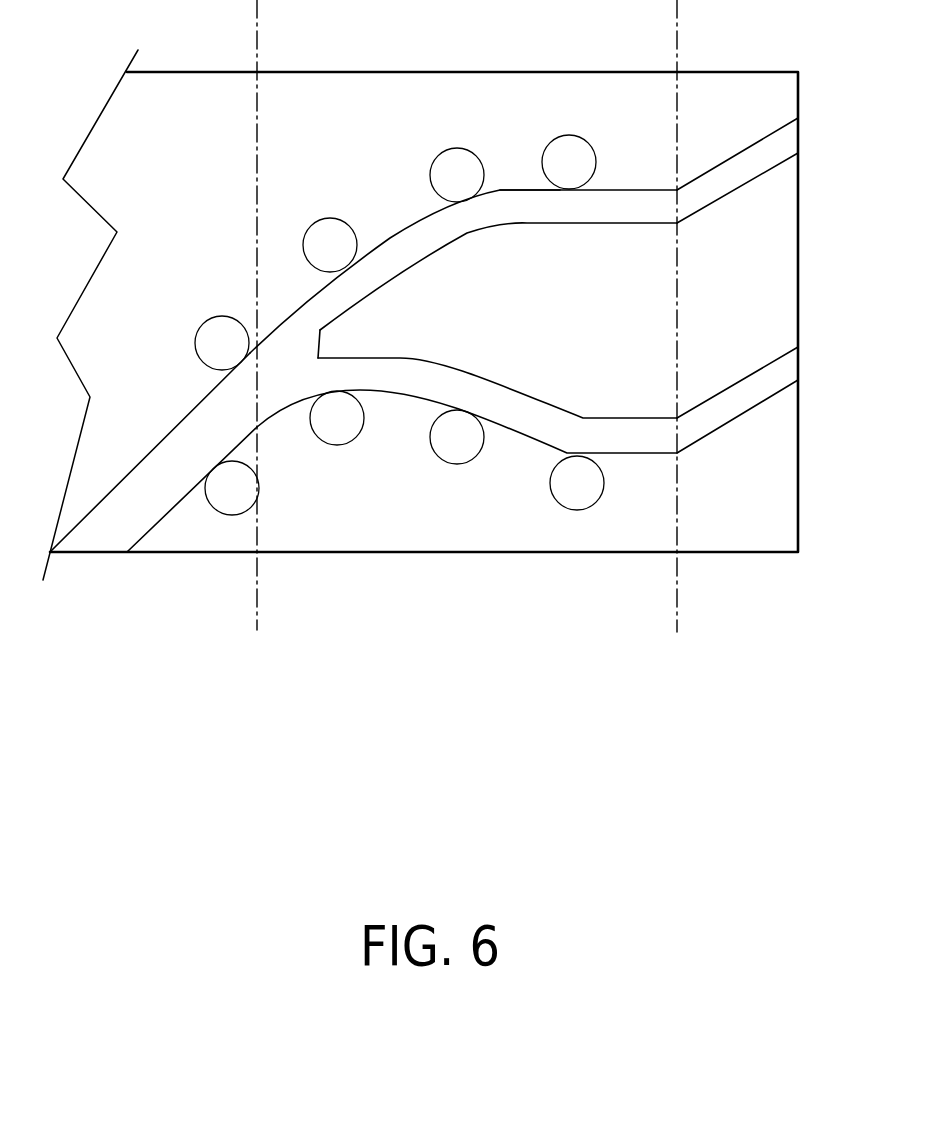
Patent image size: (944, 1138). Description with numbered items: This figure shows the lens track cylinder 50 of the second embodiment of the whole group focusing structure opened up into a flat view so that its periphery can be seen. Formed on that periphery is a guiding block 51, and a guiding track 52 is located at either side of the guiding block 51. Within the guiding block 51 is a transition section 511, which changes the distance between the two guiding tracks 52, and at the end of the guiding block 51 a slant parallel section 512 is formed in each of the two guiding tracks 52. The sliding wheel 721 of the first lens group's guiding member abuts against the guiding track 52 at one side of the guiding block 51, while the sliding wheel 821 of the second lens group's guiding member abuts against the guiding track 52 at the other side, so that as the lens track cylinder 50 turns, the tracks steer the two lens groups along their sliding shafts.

The lens track cylinder 50 is at (405, 538).
The guiding block 51 is at (453, 339).
The guiding track 52 is at (778, 355).
The transition section 511 is at (510, 205).
The slant parallel section 512 is at (147, 505).
The sliding wheel 721 is at (330, 228).
The sliding wheel 821 is at (328, 393).